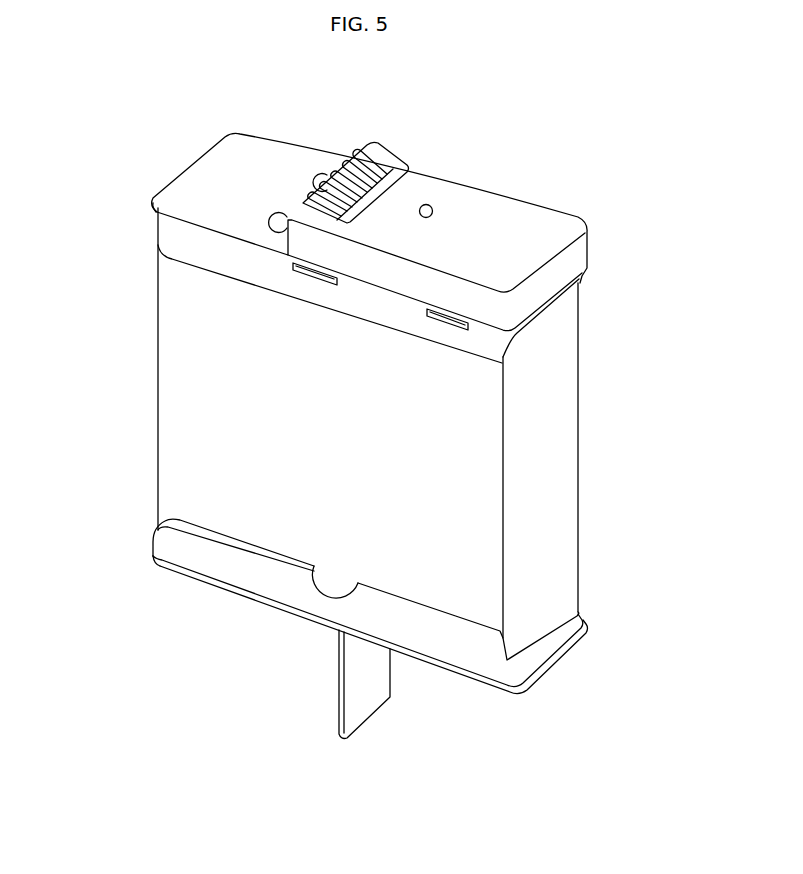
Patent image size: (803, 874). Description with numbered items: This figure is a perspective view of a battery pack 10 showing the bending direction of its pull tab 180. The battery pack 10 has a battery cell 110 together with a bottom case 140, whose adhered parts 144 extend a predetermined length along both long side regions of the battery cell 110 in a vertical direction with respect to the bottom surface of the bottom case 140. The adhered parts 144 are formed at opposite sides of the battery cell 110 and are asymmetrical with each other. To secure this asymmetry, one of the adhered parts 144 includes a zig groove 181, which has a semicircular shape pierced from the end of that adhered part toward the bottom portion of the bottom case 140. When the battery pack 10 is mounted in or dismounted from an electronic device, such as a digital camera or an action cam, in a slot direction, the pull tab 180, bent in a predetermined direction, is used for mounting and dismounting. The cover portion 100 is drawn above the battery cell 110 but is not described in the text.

The battery pack 10 is at (128, 137).
The cover 100 is at (118, 327).
The battery cell 110 is at (568, 425).
The bottom case 140 is at (160, 542).
The adhered parts 144 is at (467, 638).
The pull tab 180 is at (367, 708).
The zig groove 181 is at (333, 582).